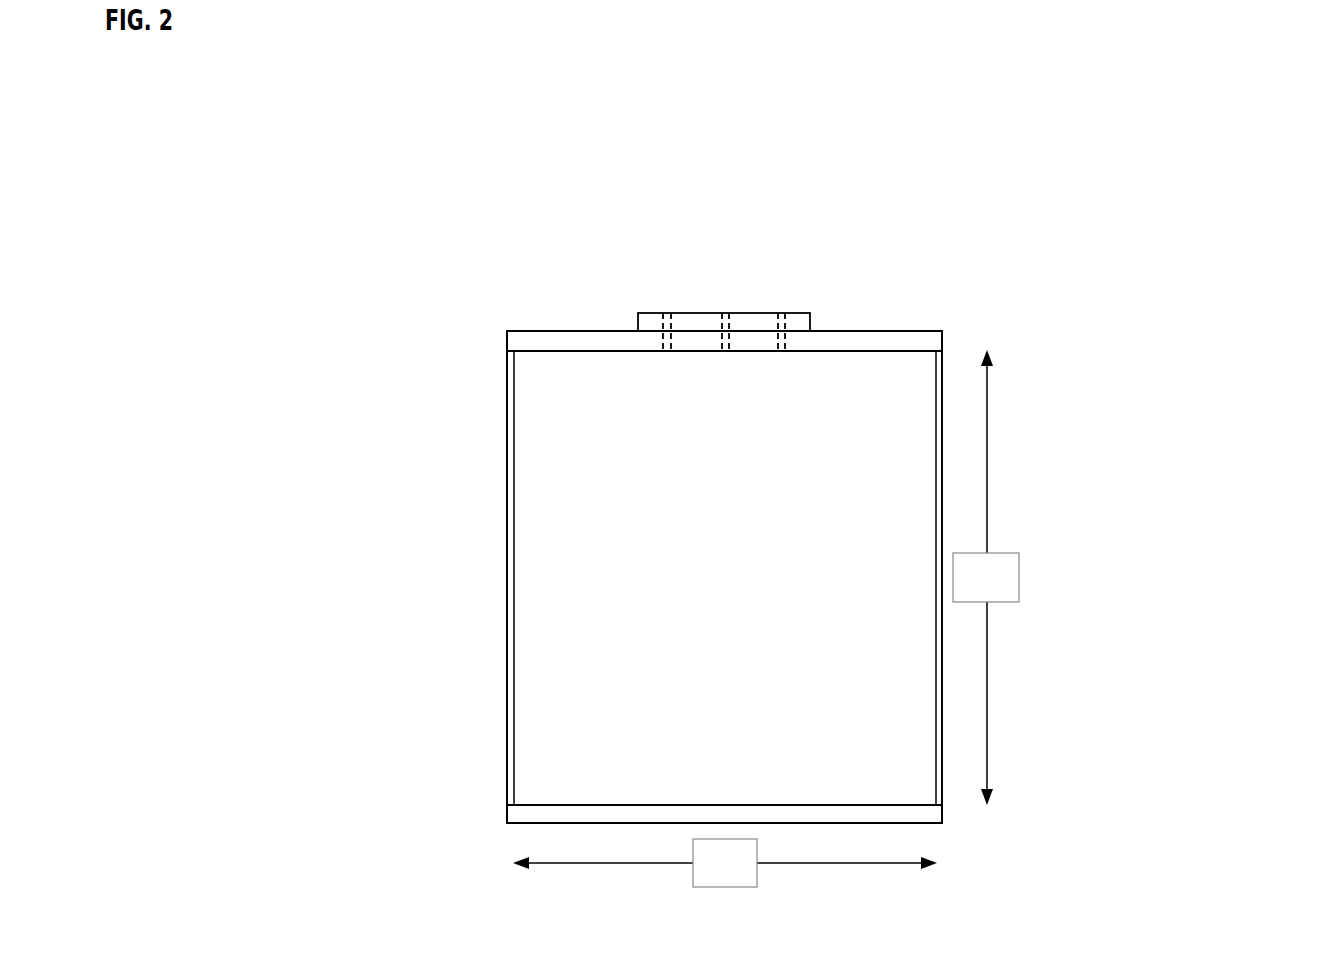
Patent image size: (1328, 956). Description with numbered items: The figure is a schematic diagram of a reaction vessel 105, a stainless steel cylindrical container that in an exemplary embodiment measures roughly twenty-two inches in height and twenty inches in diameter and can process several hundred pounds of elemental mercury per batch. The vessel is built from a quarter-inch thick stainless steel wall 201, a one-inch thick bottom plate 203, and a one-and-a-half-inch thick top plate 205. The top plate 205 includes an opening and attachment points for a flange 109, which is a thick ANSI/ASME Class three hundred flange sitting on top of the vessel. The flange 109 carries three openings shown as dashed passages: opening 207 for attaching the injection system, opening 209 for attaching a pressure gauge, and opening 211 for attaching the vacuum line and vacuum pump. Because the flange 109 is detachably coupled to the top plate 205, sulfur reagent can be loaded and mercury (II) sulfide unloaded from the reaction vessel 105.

The reaction vessel 105 is at (1307, 81).
The flange 109 is at (810, 313).
The stainless steel wall 201 is at (507, 565).
The bottom plate 203 is at (507, 810).
The top plate 205 is at (507, 345).
The opening 207 is at (724, 353).
The opening 209 is at (663, 353).
The opening 211 is at (782, 353).